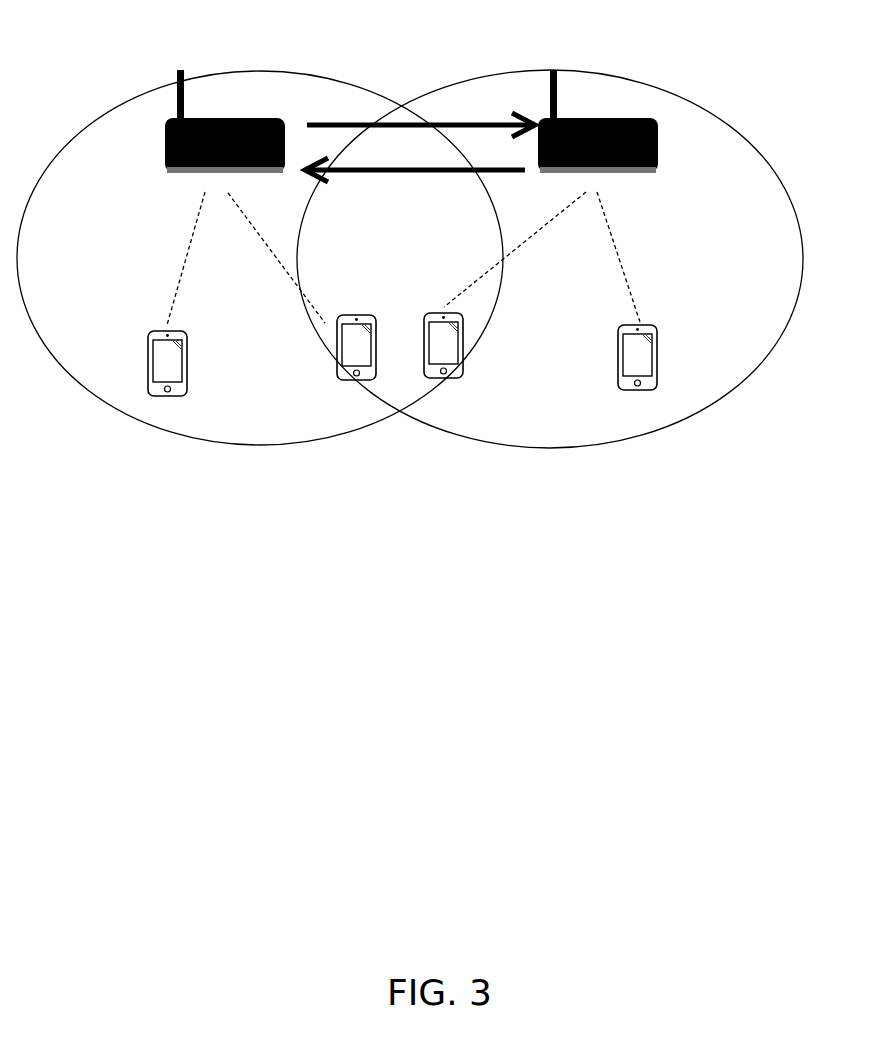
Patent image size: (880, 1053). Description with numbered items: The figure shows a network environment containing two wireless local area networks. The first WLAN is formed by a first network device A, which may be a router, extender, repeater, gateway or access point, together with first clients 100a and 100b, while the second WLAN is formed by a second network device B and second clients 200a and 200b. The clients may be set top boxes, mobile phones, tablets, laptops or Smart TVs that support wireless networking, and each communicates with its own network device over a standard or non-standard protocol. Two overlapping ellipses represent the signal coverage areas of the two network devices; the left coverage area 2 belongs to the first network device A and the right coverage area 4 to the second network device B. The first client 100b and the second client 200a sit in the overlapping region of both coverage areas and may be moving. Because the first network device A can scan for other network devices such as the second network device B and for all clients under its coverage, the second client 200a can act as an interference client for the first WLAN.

The first wireless network coverage area 2 is at (259, 447).
The second wireless network coverage area 4 is at (600, 440).
The first network device A is at (247, 125).
The second network device B is at (635, 125).
The first client 100a is at (168, 378).
The first client 100b is at (356, 361).
The second client 200a is at (442, 358).
The second client 200b is at (637, 370).